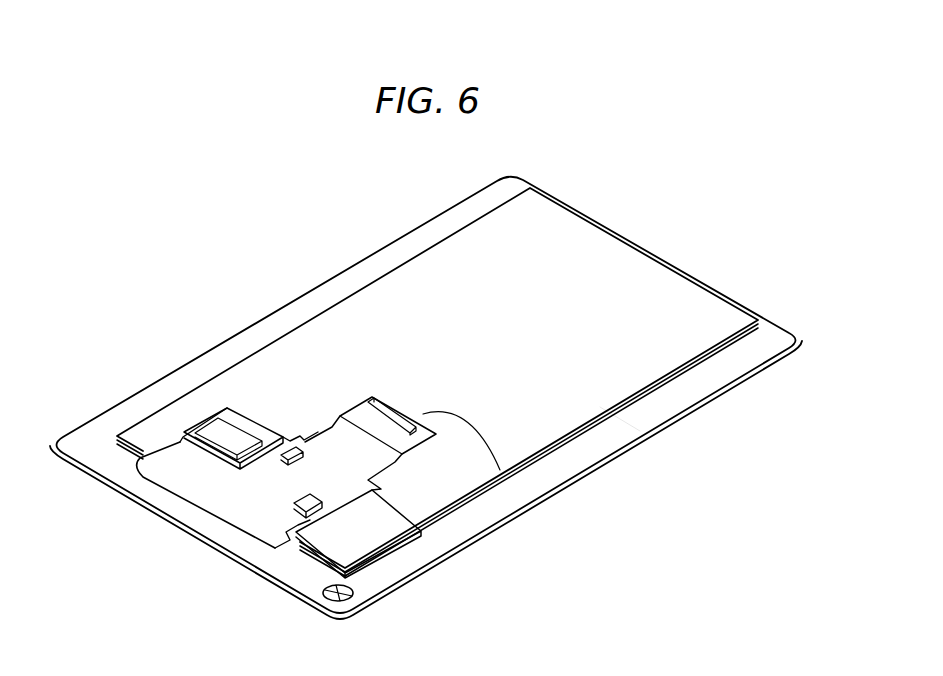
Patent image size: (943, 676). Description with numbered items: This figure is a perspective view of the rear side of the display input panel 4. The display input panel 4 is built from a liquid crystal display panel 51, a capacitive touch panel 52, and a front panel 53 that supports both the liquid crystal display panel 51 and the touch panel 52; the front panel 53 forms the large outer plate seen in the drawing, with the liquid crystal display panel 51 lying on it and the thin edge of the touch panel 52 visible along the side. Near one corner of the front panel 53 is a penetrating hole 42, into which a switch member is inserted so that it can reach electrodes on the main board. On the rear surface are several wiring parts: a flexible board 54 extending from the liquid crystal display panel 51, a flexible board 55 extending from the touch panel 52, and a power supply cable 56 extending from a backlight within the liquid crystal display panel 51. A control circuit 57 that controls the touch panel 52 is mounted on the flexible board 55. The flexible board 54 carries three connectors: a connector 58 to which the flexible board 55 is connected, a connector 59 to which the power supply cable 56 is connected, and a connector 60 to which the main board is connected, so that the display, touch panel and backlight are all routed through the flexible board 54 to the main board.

The display input panel 4 is at (656, 193).
The penetrating hole 42 is at (323, 582).
The liquid crystal display panel 51 is at (672, 297).
The capacitive touch panel 52 is at (605, 420).
The front panel 53 is at (777, 333).
The flexible board 54 is at (380, 493).
The flexible board 55 is at (157, 484).
The power supply cable 56 is at (248, 515).
The control circuit 57 is at (220, 430).
The connector 58 is at (215, 495).
The connector 59 is at (373, 492).
The connector 60 is at (423, 414).